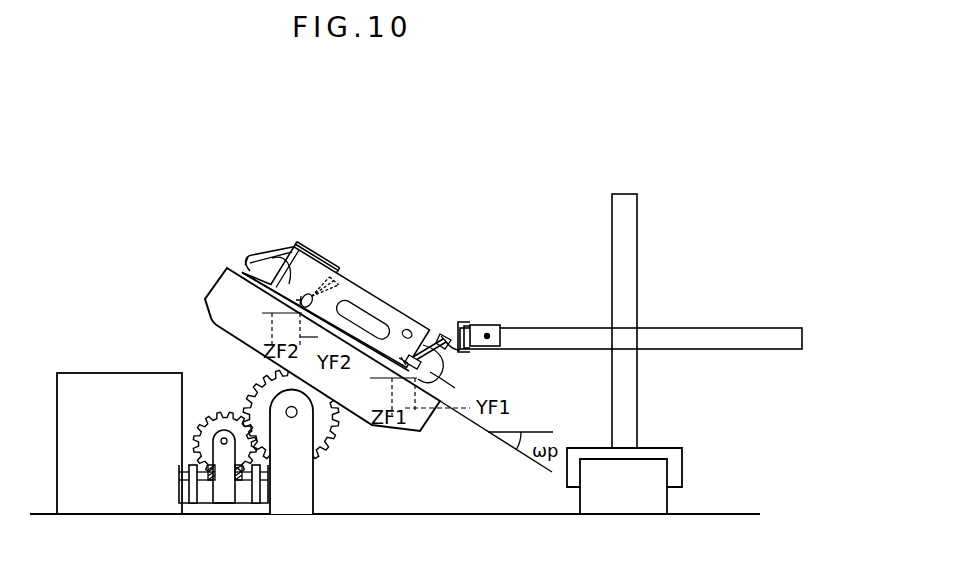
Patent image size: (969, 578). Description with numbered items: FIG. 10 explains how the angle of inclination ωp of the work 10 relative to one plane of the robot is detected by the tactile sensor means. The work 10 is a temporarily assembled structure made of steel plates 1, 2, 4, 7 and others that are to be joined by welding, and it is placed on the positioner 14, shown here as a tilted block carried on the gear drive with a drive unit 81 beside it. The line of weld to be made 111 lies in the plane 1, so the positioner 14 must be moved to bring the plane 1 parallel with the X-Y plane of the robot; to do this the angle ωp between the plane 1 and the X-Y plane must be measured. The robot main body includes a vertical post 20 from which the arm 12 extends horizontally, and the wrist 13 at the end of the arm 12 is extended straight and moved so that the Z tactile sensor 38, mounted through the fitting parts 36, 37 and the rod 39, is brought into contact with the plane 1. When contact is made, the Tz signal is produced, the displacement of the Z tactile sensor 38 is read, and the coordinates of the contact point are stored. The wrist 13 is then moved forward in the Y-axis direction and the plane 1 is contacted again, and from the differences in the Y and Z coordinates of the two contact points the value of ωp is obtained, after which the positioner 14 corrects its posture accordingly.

The steel plate 1 is at (245, 258).
The steel plate 2 is at (277, 260).
The steel plate 4 is at (340, 284).
The steel plate 7 is at (363, 292).
The work 10 is at (265, 263).
The arm 12 is at (590, 327).
The wrist 13 is at (488, 325).
The positioner 14 is at (213, 322).
The vertical post 20 is at (637, 228).
The bracket 36 is at (438, 337).
The nut 37 is at (430, 360).
The Z tactile sensor 38 is at (440, 380).
The rod 39 is at (427, 340).
The drive unit 81 is at (122, 388).
The line of weld to be made 111 is at (313, 265).